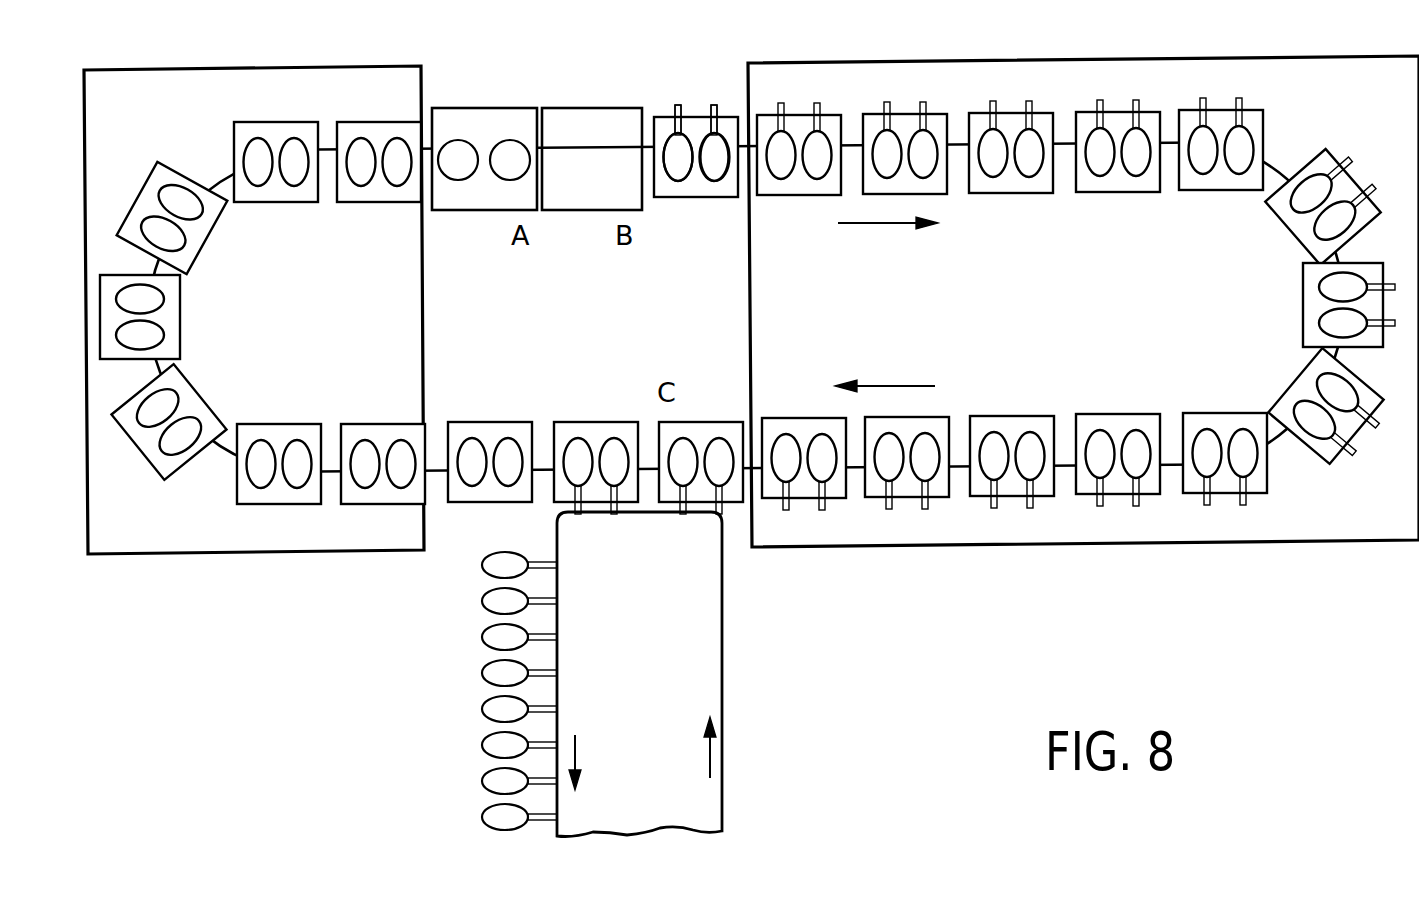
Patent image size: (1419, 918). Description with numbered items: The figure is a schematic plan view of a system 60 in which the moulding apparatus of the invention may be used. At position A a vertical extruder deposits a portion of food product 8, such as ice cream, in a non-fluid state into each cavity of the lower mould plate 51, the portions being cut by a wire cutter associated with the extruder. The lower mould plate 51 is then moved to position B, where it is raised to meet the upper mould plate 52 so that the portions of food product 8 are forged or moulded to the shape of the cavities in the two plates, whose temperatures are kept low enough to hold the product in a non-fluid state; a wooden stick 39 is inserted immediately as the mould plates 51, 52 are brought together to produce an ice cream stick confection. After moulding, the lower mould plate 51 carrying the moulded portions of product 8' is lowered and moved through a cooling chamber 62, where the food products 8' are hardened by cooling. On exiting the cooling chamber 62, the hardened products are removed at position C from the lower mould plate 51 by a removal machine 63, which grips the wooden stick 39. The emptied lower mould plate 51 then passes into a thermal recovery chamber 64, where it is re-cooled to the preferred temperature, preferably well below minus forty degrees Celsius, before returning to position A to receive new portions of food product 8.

The system 60 is at (812, 40).
The cooling chamber 62 is at (1087, 62).
The thermal recovery chamber 64 is at (272, 67).
The food product 8 is at (484, 120).
The moulded portions of product 8' is at (574, 481).
The wooden stick 39 is at (713, 106).
The lower mould plate 51 is at (459, 210).
The upper mould plate 52 is at (586, 108).
The removal machine 63 is at (722, 637).